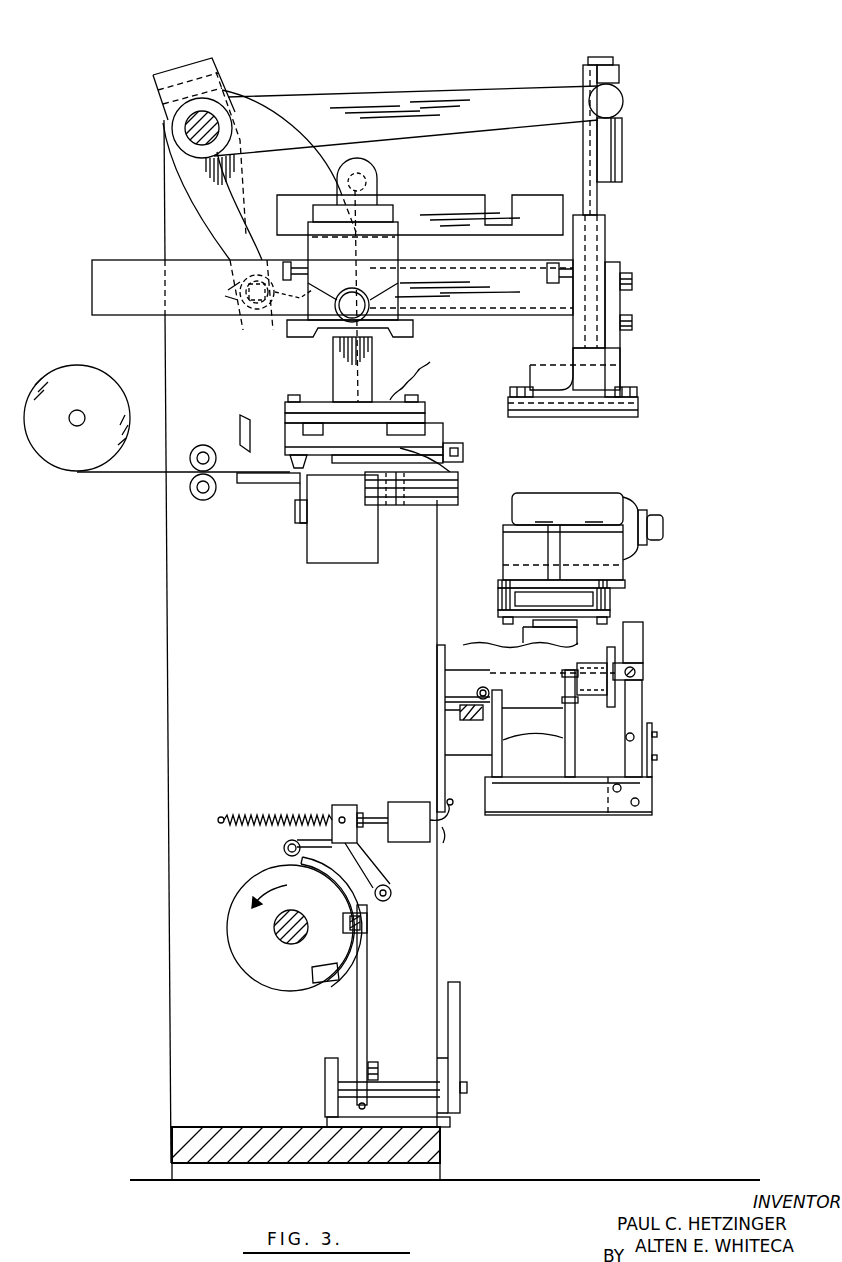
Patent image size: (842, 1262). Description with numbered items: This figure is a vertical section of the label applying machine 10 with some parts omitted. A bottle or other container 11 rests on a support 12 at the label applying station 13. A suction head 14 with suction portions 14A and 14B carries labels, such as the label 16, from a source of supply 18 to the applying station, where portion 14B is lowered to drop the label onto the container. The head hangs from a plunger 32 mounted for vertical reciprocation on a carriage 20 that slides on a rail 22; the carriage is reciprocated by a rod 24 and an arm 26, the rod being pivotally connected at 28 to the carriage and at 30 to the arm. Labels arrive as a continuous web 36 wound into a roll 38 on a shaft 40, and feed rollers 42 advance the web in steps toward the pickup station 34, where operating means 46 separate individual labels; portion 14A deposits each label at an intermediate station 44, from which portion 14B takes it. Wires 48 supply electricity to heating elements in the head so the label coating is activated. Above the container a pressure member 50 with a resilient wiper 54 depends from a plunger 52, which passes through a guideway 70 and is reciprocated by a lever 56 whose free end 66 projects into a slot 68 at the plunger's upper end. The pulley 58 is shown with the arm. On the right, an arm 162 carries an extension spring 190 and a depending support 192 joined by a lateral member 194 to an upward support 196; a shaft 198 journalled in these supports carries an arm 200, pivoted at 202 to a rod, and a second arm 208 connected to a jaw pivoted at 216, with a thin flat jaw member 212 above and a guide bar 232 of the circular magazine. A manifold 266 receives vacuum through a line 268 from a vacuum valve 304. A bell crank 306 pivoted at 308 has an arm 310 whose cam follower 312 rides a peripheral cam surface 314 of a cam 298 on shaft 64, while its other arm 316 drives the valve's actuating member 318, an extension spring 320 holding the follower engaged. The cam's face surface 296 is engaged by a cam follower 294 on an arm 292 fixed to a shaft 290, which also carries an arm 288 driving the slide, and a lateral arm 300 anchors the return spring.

The label applying machine 10 is at (690, 350).
The bottle or other container 11 is at (615, 497).
The support 12 is at (610, 553).
The label applying station 13 is at (690, 540).
The suction head 14 is at (435, 430).
The suction head portion 14A is at (303, 468).
The suction head portion 14B is at (460, 482).
The label 16 is at (452, 468).
The source of supply 18 is at (145, 402).
The carriage 20 is at (400, 256).
The rail 22 is at (490, 270).
The rod 24 is at (270, 330).
The arm 26 is at (240, 193).
The pivotal connection 28 is at (345, 318).
The pivotal connection 30 is at (248, 312).
The plunger 32 is at (368, 362).
The pickup station 34 is at (288, 493).
The continuous web 36 is at (145, 470).
The roll 38 is at (40, 382).
The shaft 40 is at (85, 410).
The feed rollers 42 is at (212, 442).
The intermediate station 44 is at (398, 477).
The operating means 46 is at (240, 422).
The wires 48 is at (427, 366).
The pressure member 50 is at (638, 401).
The plunger 52 is at (598, 198).
The wiper 54 is at (527, 383).
The lever 56 is at (447, 98).
The hub 58 is at (213, 115).
The shaft 64 is at (277, 923).
The free end of lever 66 is at (615, 97).
The slot 68 is at (618, 82).
The guideway 70 is at (602, 243).
The arm 162 is at (452, 703).
The extension spring 190 is at (480, 693).
The support 192 is at (485, 762).
The lateral member 194 is at (637, 793).
The support 196 is at (652, 743).
The shaft 198 is at (578, 772).
The arm 200 is at (497, 748).
The pivot 202 is at (497, 697).
The arm 208 is at (628, 750).
The jaw member 212 is at (644, 672).
The pivot 216 is at (633, 730).
The guide bar 232 is at (640, 638).
The manifold element 266 is at (587, 723).
The line 268 is at (443, 843).
The arm 288 is at (457, 1035).
The shaft 290 is at (400, 1083).
The arm 292 is at (367, 993).
The cam follower 294 is at (357, 927).
The cam surface 296 is at (333, 978).
The cam 298 is at (257, 962).
The arm 300 is at (370, 1067).
The vacuum valve 304 is at (410, 807).
The bell crank 306 is at (370, 870).
The pivot 308 is at (390, 898).
The arm 310 is at (308, 843).
The cam follower 312 is at (282, 848).
The cam surface 314 is at (232, 895).
The arm 316 is at (342, 805).
The actuating member 318 is at (372, 817).
The extension spring 320 is at (252, 813).